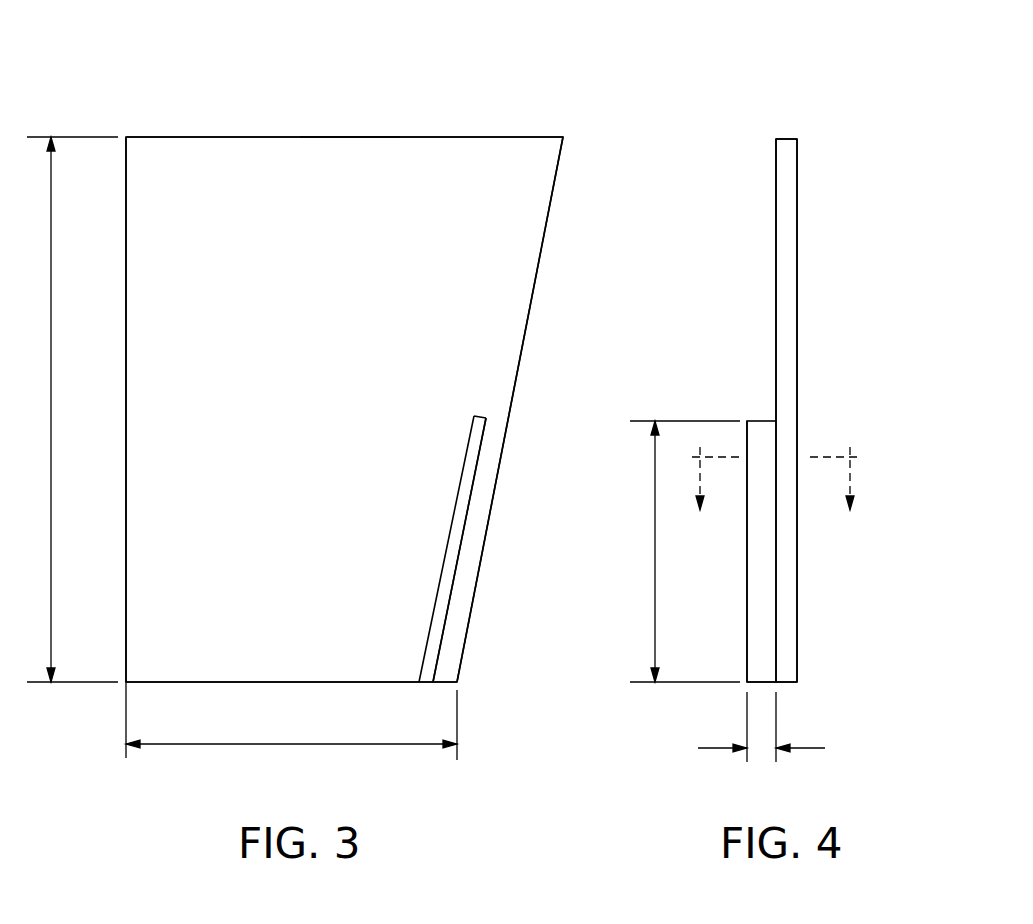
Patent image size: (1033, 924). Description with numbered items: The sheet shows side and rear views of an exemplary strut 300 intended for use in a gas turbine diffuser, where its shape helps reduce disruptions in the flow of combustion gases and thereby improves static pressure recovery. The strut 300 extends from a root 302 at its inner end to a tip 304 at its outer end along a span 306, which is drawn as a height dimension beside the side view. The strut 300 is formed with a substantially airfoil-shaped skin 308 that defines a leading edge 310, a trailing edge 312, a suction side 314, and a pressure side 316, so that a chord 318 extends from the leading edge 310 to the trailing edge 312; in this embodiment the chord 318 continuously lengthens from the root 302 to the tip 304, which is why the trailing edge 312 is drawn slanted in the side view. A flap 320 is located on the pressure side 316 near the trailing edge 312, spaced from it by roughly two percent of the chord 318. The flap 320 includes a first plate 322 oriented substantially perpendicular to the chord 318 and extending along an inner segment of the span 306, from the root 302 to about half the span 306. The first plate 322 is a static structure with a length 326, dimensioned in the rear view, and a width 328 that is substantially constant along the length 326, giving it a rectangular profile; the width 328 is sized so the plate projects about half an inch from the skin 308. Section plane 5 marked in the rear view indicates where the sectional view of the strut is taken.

In FIG. 3, the strut 300 is at (198, 72).
In FIG. 4, the strut 300 is at (768, 92).
In FIG. 3, the root 302 is at (124, 683).
In FIG. 4, the root 302 is at (797, 682).
In FIG. 3, the tip 304 is at (563, 137).
In FIG. 4, the tip 304 is at (797, 139).
In FIG. 3, the span 306 is at (52, 237).
In FIG. 4, the skin 308 is at (776, 210).
In FIG. 3, the leading edge 310 is at (126, 410).
In FIG. 3, the trailing edge 312 is at (531, 302).
In FIG. 4, the trailing edge 312 is at (788, 268).
In FIG. 4, the suction side 314 is at (798, 583).
In FIG. 3, the pressure side 316 is at (325, 171).
In FIG. 3, the chord 318 is at (260, 744).
In FIG. 3, the flap 320 is at (460, 540).
In FIG. 4, the flap 320 is at (760, 613).
In FIG. 3, the first plate 322 is at (480, 447).
In FIG. 4, the first plate 322 is at (762, 558).
In FIG. 4, the length 326 is at (655, 575).
In FIG. 4, the width 328 is at (762, 750).
In FIG. 4, the plane 5- 5 is at (776, 470).